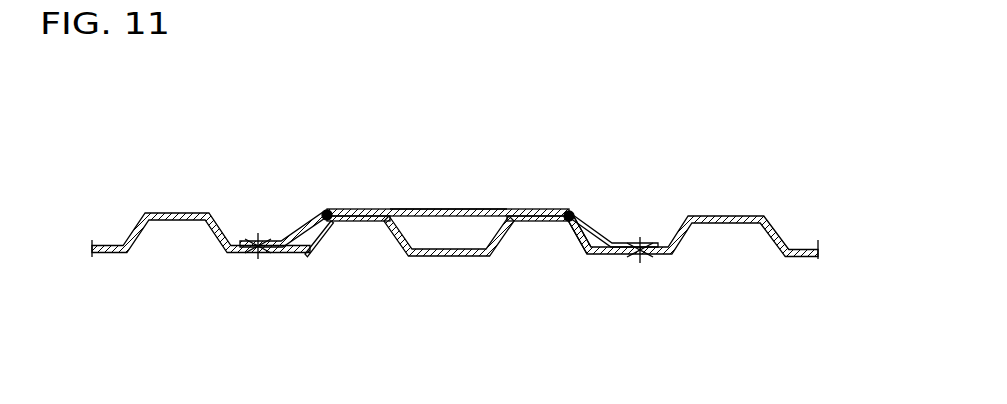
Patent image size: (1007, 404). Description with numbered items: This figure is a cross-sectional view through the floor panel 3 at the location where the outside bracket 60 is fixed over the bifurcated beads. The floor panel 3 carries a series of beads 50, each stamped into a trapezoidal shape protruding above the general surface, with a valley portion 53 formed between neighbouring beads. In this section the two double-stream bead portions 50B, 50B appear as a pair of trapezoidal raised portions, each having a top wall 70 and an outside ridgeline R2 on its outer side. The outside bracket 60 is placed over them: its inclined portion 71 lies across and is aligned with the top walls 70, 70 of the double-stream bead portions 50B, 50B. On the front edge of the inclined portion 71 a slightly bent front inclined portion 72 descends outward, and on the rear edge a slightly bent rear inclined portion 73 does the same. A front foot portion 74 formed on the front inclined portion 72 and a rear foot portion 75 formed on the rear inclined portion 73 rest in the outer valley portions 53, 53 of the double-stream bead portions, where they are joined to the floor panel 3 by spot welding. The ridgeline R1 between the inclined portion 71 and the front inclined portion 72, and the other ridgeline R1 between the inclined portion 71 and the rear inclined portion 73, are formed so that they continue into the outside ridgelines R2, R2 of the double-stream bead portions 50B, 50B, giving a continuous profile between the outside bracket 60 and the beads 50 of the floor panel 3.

The floor panel 3 is at (812, 236).
The bead 50 is at (167, 213).
The double-stream bead portion 50B is at (415, 256).
The valley portion 53 is at (300, 252).
The outside bracket 60 is at (455, 160).
The top wall 70 is at (363, 210).
The inclined portion 71 is at (453, 209).
The front inclined portion 72 is at (303, 213).
The rear inclined portion 73 is at (604, 222).
The front foot portion 74 is at (257, 243).
The rear foot portion 75 is at (642, 244).
The ridgeline R1 is at (327, 210).
The outside ridgeline R2 is at (331, 222).